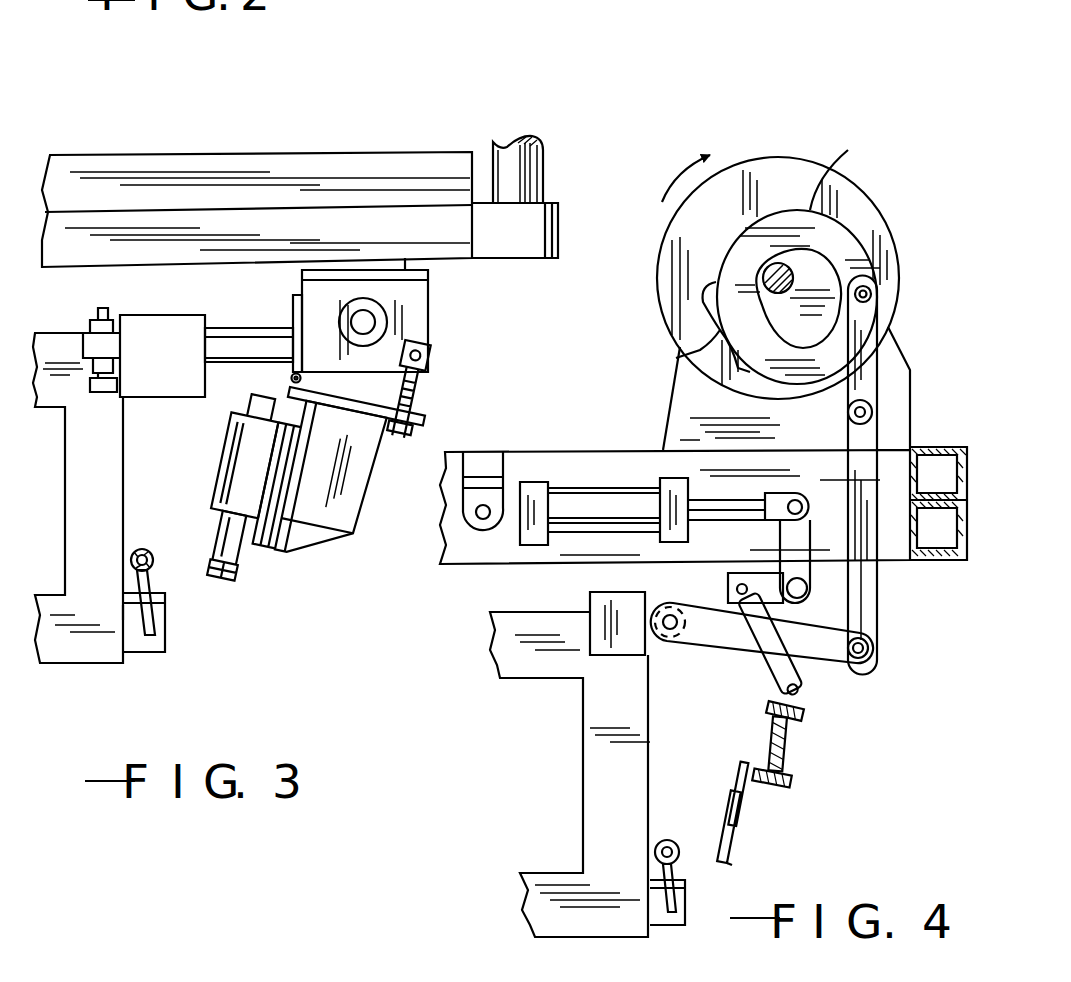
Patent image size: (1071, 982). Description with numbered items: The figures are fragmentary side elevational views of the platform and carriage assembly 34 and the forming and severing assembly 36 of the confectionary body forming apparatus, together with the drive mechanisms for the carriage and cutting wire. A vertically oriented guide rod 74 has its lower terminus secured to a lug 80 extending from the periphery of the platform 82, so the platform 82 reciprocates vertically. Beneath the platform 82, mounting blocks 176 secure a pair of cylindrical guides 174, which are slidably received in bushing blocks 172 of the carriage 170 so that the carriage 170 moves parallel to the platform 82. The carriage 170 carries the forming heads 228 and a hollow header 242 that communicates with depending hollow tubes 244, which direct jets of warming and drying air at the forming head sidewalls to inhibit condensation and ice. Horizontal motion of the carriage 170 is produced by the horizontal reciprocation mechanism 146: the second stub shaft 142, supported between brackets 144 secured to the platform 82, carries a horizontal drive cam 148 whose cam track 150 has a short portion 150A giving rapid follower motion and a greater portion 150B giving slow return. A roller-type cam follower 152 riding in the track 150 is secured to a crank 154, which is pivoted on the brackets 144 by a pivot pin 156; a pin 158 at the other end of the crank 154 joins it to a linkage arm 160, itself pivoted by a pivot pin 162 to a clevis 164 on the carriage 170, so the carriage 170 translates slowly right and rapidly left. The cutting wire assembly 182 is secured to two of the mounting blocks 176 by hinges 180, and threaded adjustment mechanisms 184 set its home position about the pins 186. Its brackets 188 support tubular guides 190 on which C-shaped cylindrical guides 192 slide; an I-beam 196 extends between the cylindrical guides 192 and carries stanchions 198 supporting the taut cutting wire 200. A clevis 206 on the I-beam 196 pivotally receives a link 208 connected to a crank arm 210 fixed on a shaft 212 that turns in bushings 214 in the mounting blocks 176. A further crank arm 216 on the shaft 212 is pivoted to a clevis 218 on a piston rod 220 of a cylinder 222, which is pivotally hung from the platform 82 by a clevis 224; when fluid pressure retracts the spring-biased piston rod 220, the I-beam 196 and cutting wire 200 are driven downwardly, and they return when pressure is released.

In FIG. 4, the platform and carriage assembly 34 is at (538, 698).
In FIG. 3, the forming and severing assembly 36 is at (303, 660).
In FIG. 3, the guide rod 74 is at (545, 172).
In FIG. 3, the lug 80 is at (558, 230).
In FIG. 3, the platform 82 is at (290, 152).
In FIG. 4, the platform 82 is at (603, 450).
In FIG. 4, the second stub shaft 142 is at (757, 272).
In FIG. 4, the bracket 144 is at (830, 436).
In FIG. 4, the horizontal reciprocation mechanism 146 is at (812, 70).
In FIG. 4, the horizontal drive cam 148 is at (779, 172).
In FIG. 4, the cam track 150 is at (850, 222).
In FIG. 4, the short portion of the cam track 150A is at (676, 358).
In FIG. 4, the greater portion of the cam track 150B is at (852, 165).
In FIG. 4, the cam follower 152 is at (840, 265).
In FIG. 4, the crank 154 is at (867, 440).
In FIG. 4, the pivot pin 156 is at (870, 388).
In FIG. 4, the pin 158 is at (865, 640).
In FIG. 4, the linkage arm 160 is at (828, 647).
In FIG. 4, the pivot pin 162 is at (672, 630).
In FIG. 4, the clevis 164 is at (645, 600).
In FIG. 3, the carriage 170 is at (97, 432).
In FIG. 4, the carriage 170 is at (620, 798).
In FIG. 3, the bushing block 172 is at (178, 377).
In FIG. 3, the guide 174 is at (226, 333).
In FIG. 3, the mounting block 176 is at (294, 296).
In FIG. 3, the hinge 180 is at (410, 392).
In FIG. 3, the cutting wire assembly 182 is at (362, 548).
In FIG. 3, the threaded adjustment mechanism 184 is at (430, 408).
In FIG. 3, the pin 186 is at (290, 378).
In FIG. 3, the bracket 188 is at (297, 528).
In FIG. 3, the tubular guide 190 is at (232, 535).
In FIG. 3, the cylindrical guide 192 is at (242, 477).
In FIG. 4, the I-beam 196 is at (787, 738).
In FIG. 4, the stanchion 198 is at (753, 808).
In FIG. 4, the cutting wire 200 is at (732, 866).
In FIG. 4, the clevis 206 is at (780, 690).
In FIG. 4, the link 208 is at (750, 640).
In FIG. 4, the crank arm 210 is at (728, 592).
In FIG. 3, the shaft 212 is at (367, 322).
In FIG. 4, the shaft 212 is at (810, 595).
In FIG. 3, the bushing 214 is at (380, 312).
In FIG. 4, the crank arm 216 is at (780, 540).
In FIG. 4, the clevis 218 is at (775, 498).
In FIG. 4, the piston rod 220 is at (727, 495).
In FIG. 4, the cylinder 222 is at (575, 484).
In FIG. 4, the clevis 224 is at (485, 458).
In FIG. 3, the forming head 228 is at (167, 652).
In FIG. 3, the header 242 is at (150, 555).
In FIG. 3, the hollow tube 244 is at (123, 617).